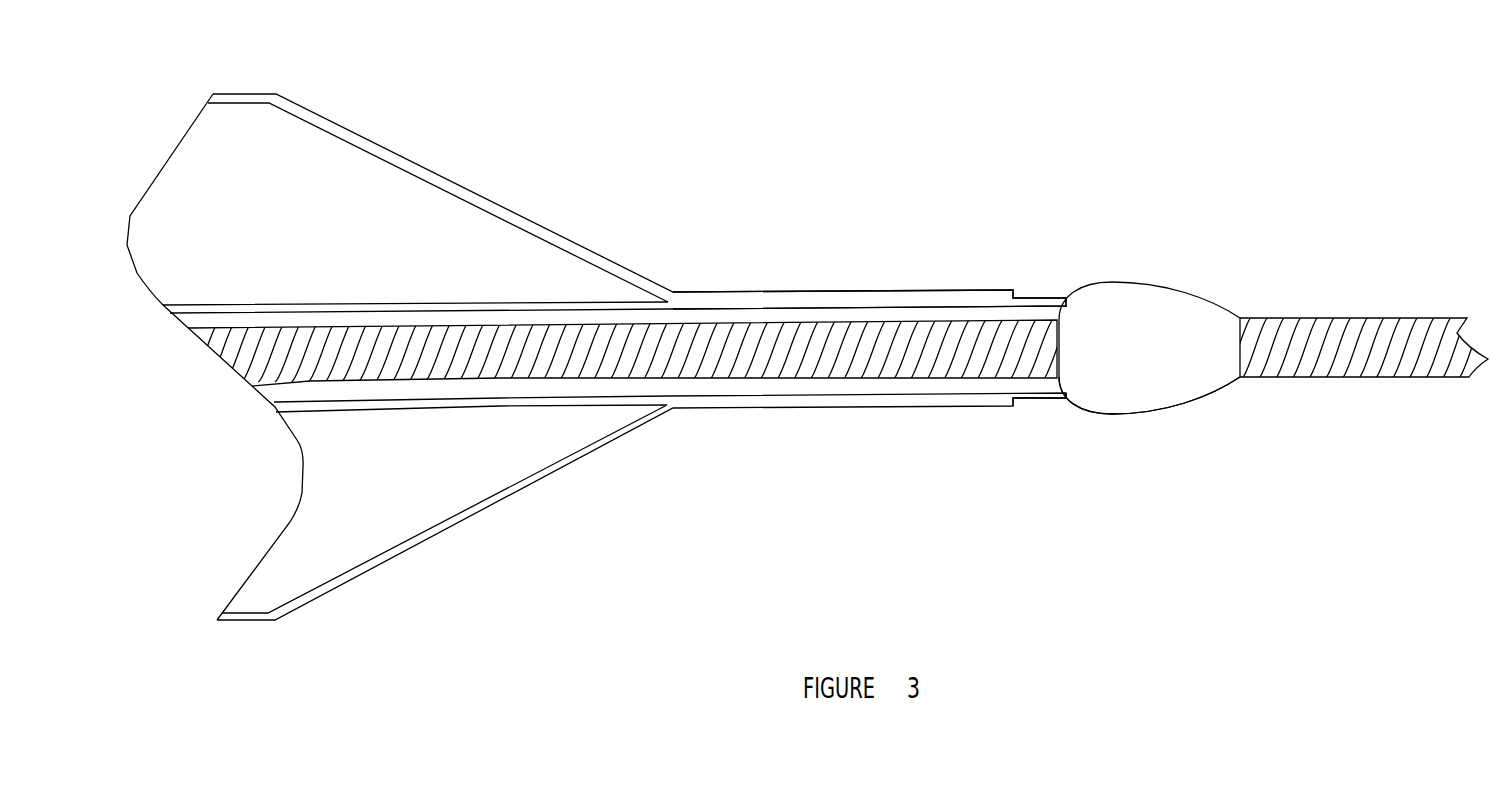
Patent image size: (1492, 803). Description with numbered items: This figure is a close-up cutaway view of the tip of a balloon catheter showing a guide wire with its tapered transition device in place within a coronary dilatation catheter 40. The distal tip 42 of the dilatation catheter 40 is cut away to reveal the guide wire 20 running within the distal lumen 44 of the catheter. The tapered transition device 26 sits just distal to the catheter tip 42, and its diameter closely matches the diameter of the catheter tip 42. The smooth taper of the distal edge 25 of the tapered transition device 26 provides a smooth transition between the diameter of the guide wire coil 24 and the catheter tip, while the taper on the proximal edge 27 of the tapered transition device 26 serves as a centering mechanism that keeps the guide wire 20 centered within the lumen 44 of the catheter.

The guide wire 20 is at (807, 357).
The guide wire coil 24 is at (1427, 377).
The distal edge 25 is at (1225, 390).
The tapered transition device 26 is at (1179, 265).
The proximal edge 27 is at (1078, 406).
The coronary dilatation catheter 40 is at (575, 556).
The distal tip 42 is at (1042, 398).
The distal lumen 44 is at (1026, 312).